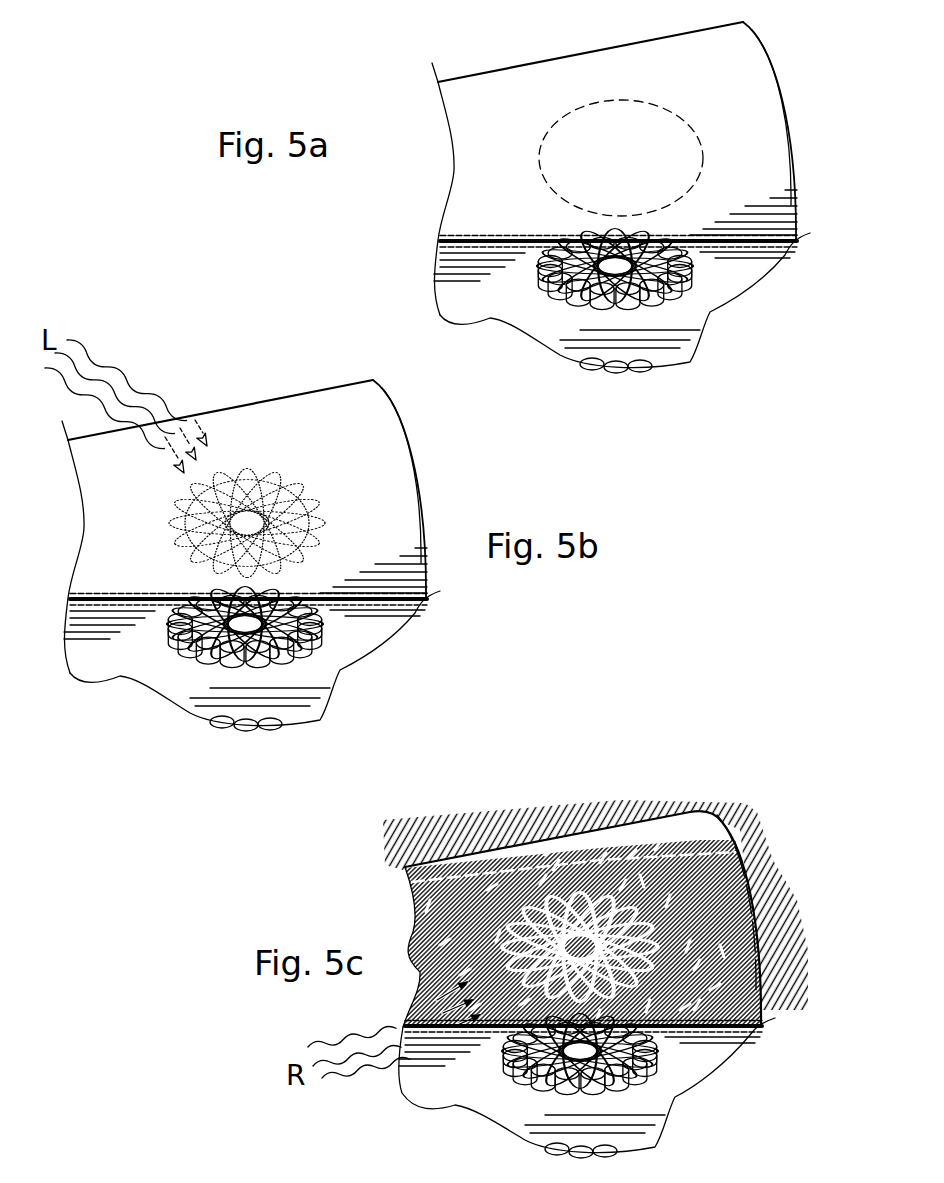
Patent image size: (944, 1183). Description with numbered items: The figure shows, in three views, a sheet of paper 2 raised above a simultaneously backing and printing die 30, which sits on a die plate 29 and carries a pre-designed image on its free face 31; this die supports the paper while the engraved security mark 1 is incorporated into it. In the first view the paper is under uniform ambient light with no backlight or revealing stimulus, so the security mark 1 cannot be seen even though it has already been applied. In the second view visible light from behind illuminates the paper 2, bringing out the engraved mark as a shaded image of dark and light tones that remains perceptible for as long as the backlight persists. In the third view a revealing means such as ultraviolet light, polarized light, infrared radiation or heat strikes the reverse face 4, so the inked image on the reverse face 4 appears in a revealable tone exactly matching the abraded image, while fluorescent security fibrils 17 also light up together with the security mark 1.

In FIG. 5A, the security mark 1 is at (590, 160).
In FIG. 5B, the security mark 1 is at (322, 541).
In FIG. 5C, the security mark 1 is at (512, 968).
In FIG. 5A, the paper 2 is at (605, 40).
In FIG. 5B, the paper 2 is at (280, 396).
In FIG. 5C, the paper 2 is at (587, 966).
In FIG. 5A, the reverse face 4 is at (744, 78).
In FIG. 5B, the reverse face 4 is at (373, 453).
In FIG. 5C, the reverse face 4 is at (712, 840).
In FIG. 5C, the security fibrils 17 is at (670, 887).
In FIG. 5A, the die plate 29 is at (478, 309).
In FIG. 5B, the die plate 29 is at (101, 676).
In FIG. 5C, the die plate 29 is at (659, 1144).
In FIG. 5A, the simultaneously backing and printing die 30 is at (664, 305).
In FIG. 5B, the simultaneously backing and printing die 30 is at (318, 657).
In FIG. 5C, the simultaneously backing and printing die 30 is at (538, 1093).
In FIG. 5A, the free face 31 is at (600, 245).
In FIG. 5B, the free face 31 is at (218, 594).
In FIG. 5C, the free face 31 is at (663, 1047).